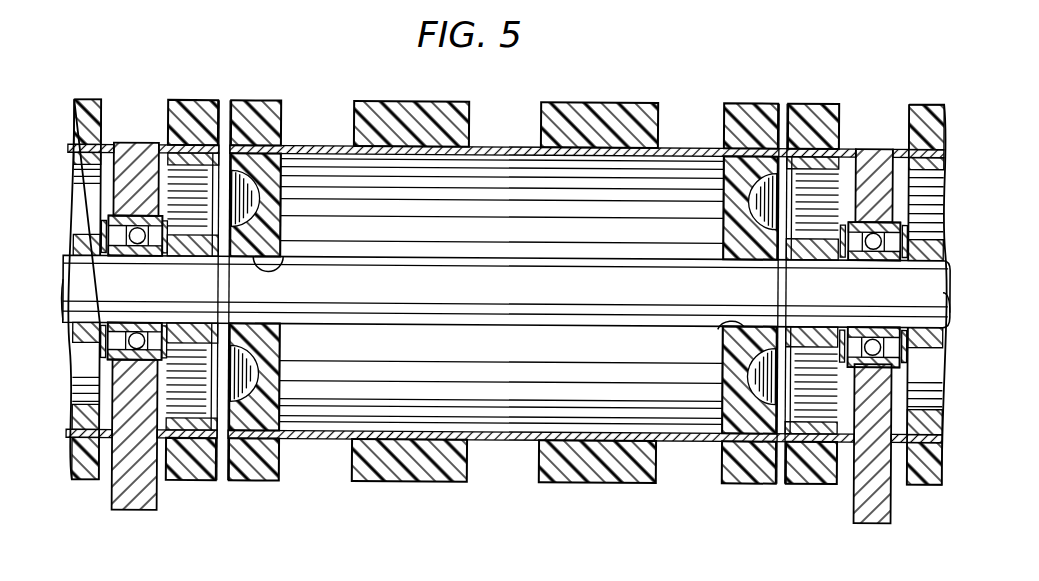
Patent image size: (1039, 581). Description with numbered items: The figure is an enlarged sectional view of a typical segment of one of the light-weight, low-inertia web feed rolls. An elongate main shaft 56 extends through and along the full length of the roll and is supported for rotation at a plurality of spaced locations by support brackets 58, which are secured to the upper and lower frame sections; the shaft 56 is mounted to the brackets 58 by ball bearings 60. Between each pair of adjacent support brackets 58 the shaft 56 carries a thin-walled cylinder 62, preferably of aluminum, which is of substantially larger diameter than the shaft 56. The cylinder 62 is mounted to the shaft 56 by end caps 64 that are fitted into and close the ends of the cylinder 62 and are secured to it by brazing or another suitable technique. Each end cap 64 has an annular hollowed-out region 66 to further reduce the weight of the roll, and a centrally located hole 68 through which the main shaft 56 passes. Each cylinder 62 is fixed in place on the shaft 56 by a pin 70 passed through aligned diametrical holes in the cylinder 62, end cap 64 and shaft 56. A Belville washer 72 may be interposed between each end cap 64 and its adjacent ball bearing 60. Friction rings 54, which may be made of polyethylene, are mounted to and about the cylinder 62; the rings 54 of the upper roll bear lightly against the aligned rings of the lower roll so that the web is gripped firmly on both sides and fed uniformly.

The friction rings 54 is at (250, 100).
The main shaft 56 is at (528, 302).
The support brackets 58 is at (143, 487).
The ball bearings 60 is at (102, 222).
The thin-walled cylinder 62 is at (512, 147).
The end caps 64 is at (286, 235).
The annular hollowed-out region 66 is at (253, 478).
The centrally located hole 68 is at (283, 258).
The pin 70 is at (221, 160).
The Belville washer 72 is at (161, 222).